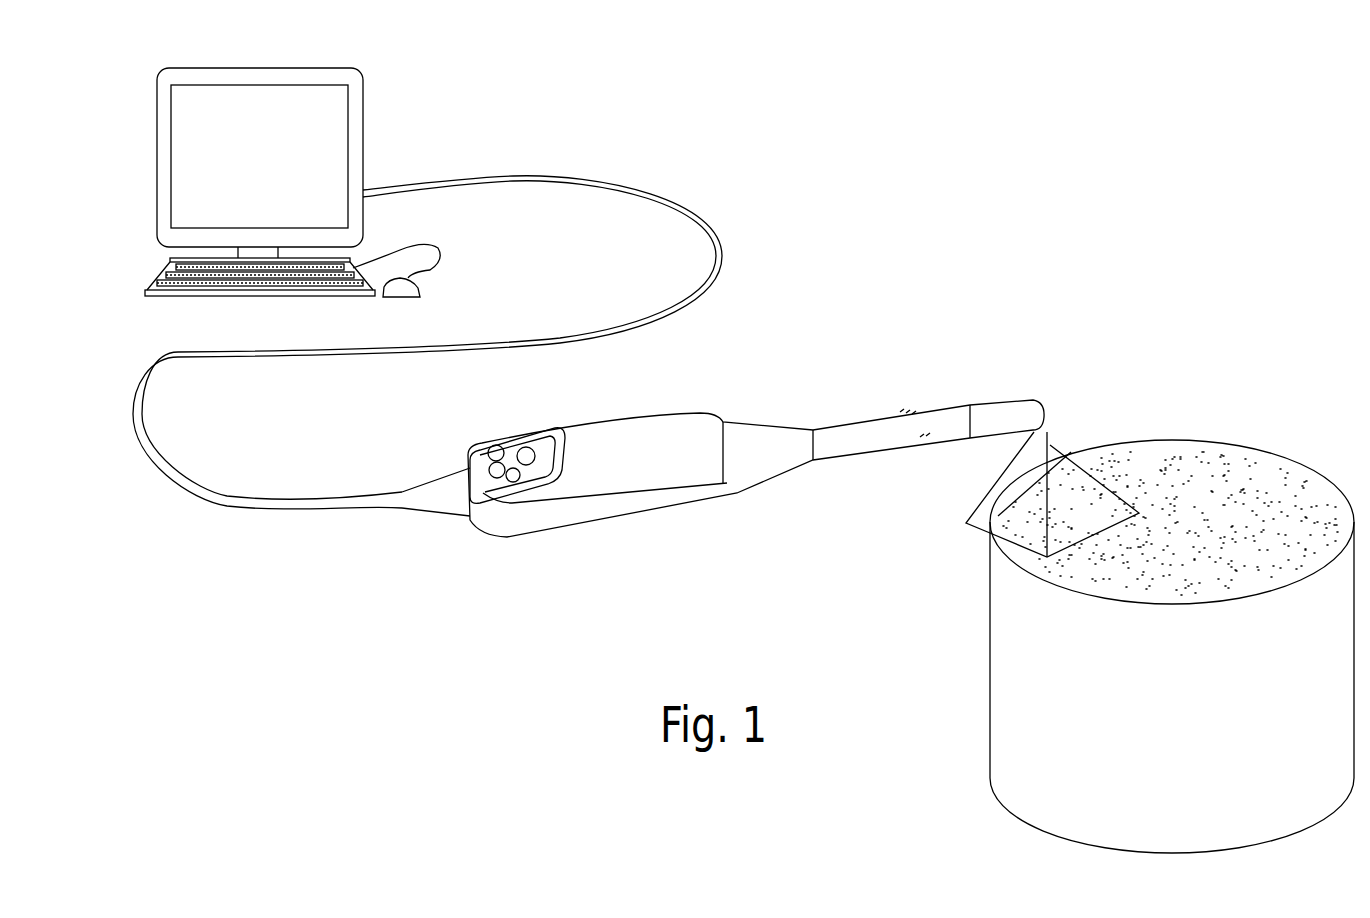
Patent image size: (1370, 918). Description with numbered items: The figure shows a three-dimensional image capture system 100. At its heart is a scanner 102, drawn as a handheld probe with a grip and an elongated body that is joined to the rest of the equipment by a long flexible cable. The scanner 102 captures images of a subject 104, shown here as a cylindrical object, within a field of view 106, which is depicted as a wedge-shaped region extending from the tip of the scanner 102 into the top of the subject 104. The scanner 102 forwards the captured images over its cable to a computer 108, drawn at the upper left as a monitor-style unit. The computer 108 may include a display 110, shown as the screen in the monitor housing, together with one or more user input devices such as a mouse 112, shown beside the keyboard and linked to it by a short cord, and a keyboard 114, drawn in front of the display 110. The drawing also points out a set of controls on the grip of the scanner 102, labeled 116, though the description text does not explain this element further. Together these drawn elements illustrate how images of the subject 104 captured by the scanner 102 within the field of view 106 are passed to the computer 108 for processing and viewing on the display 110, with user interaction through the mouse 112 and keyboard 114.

The system 100 is at (891, 265).
The scanner 102 is at (1018, 400).
The subject 104 is at (1195, 440).
The field of view 106 is at (1126, 538).
The computer 108 is at (157, 178).
The display 110 is at (303, 66).
The mouse 112 is at (422, 291).
The keyboard 114 is at (165, 272).
The user controls 116 is at (511, 434).